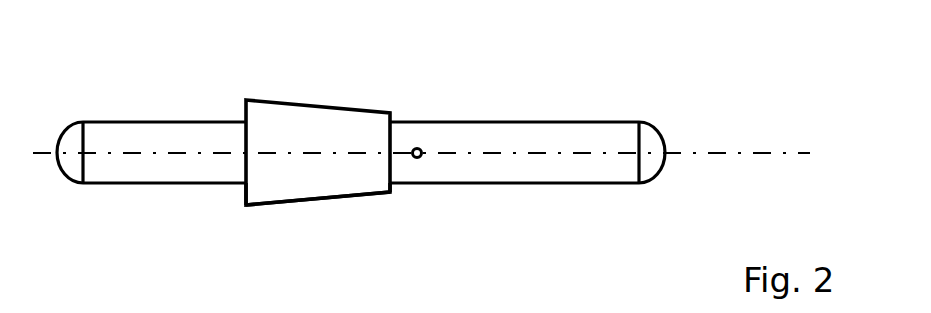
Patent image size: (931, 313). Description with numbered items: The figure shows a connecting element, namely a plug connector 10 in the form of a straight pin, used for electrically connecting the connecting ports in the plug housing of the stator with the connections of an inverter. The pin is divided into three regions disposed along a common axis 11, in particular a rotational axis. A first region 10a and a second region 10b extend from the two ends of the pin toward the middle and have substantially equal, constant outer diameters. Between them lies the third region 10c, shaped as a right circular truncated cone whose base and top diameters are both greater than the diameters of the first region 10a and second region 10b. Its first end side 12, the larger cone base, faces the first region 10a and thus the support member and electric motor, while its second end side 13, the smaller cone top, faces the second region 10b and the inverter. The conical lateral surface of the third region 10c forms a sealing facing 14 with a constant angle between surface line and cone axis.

The plug connector 10 is at (361, 142).
The first region 10a is at (203, 136).
The second region 10b is at (572, 137).
The third region 10c is at (358, 138).
The common axis 11 is at (713, 153).
The first end side 12 is at (243, 186).
The second end side 13 is at (392, 187).
The sealing facing 14 is at (333, 197).